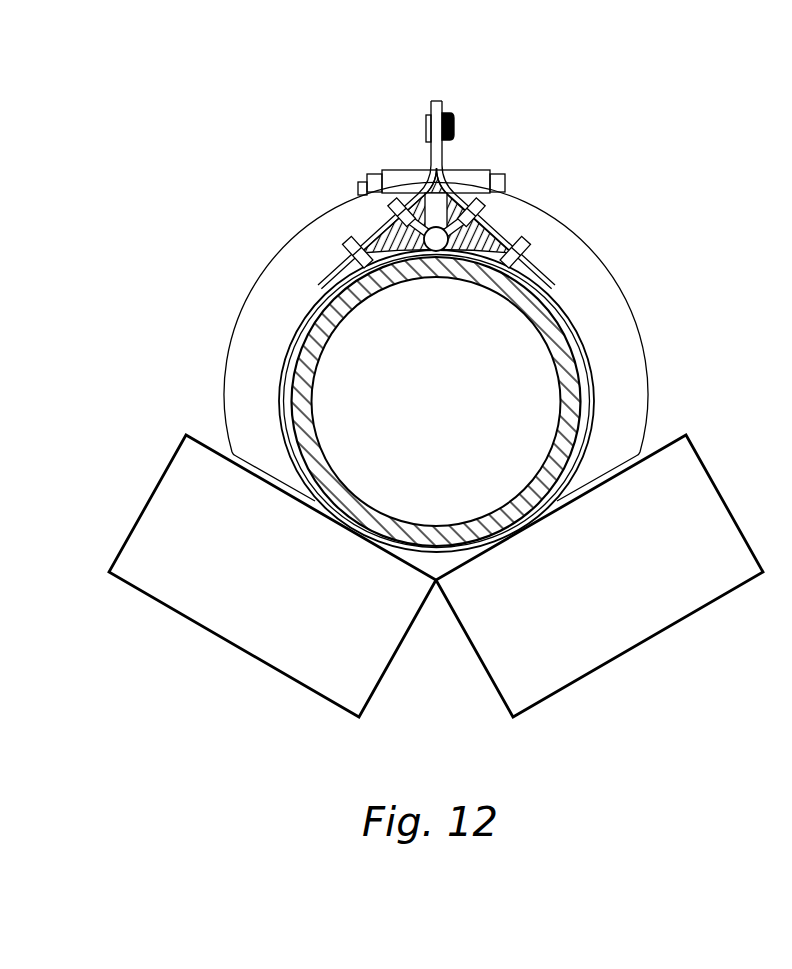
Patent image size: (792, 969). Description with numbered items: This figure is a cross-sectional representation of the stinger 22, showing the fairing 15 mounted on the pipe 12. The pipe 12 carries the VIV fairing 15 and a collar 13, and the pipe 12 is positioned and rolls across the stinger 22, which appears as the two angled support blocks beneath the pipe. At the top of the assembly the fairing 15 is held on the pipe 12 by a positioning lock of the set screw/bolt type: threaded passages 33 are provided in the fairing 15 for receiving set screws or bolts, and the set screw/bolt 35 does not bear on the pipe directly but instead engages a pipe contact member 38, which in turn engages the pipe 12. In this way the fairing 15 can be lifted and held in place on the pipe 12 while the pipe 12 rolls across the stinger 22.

The pipe 12 is at (314, 413).
The collar 13 is at (626, 302).
The fairing 15 is at (503, 216).
The stinger 22 is at (212, 637).
The threaded passages 33 is at (459, 196).
The set screw/bolt 35 is at (424, 194).
The pipe contact member 38 is at (436, 241).